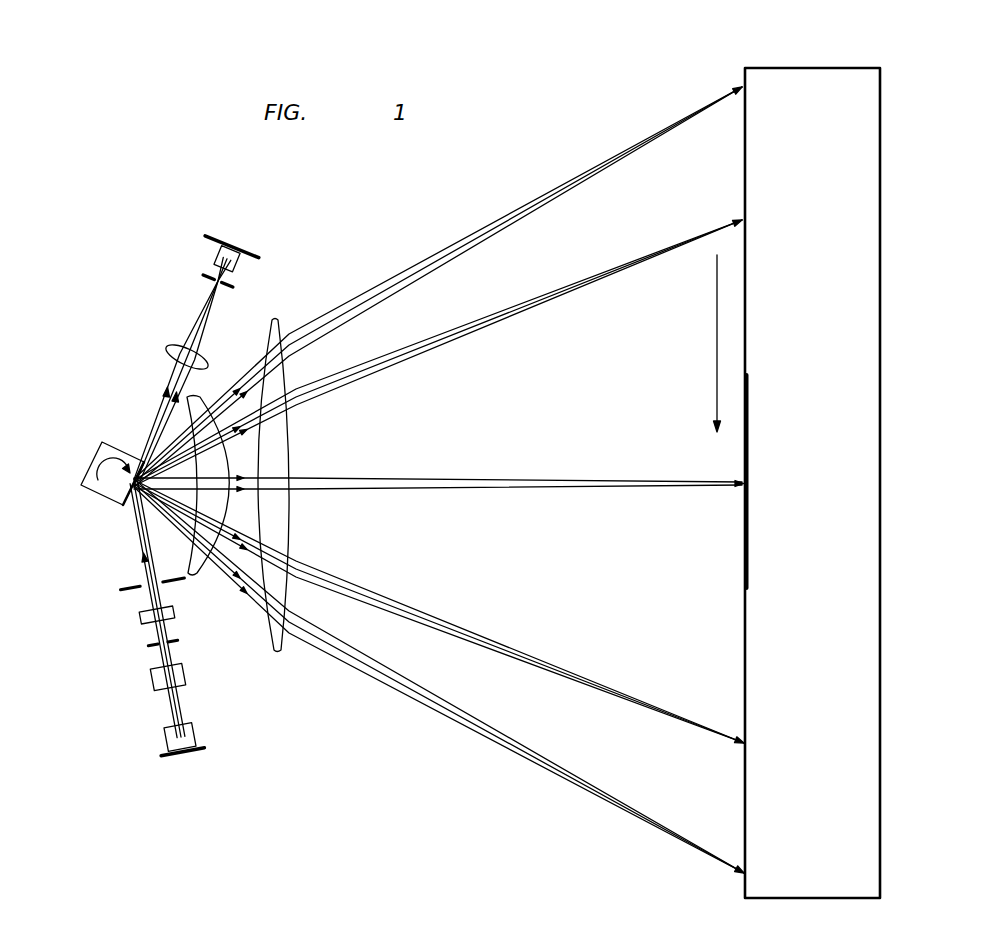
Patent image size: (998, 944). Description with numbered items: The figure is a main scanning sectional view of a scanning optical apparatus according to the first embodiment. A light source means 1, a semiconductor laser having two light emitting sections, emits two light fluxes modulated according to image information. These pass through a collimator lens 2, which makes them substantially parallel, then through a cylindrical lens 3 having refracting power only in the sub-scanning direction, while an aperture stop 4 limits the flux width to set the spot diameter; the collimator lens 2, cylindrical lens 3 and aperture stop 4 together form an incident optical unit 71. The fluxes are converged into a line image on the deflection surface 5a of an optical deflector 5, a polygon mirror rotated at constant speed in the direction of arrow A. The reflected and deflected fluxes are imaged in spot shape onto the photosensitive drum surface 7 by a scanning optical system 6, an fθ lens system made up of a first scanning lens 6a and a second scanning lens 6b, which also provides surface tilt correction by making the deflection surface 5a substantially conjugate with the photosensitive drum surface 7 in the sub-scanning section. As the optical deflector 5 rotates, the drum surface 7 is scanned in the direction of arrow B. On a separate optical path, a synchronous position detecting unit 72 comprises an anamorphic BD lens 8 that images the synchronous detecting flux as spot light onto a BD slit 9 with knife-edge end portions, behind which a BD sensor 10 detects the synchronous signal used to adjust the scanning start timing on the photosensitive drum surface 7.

The light source means 1 is at (166, 741).
The collimator lens 2 is at (153, 680).
The cylindrical lens 3 is at (140, 618).
The aperture stop 4 is at (129, 577).
The optical deflector 5 is at (88, 480).
The deflection surface 5a is at (130, 497).
The scanning optical system 6 is at (252, 536).
The first scanning lens 6a is at (193, 577).
The second scanning lens 6b is at (285, 515).
The photosensitive drum surface 7 is at (882, 775).
The BD lens 8 is at (171, 354).
The BD slit 9 is at (204, 276).
The BD sensor 10 is at (188, 248).
The incident optical unit 71 is at (118, 660).
The synchronous position detecting unit 72 is at (166, 349).
The arrow A is at (125, 460).
The arrow B is at (715, 335).